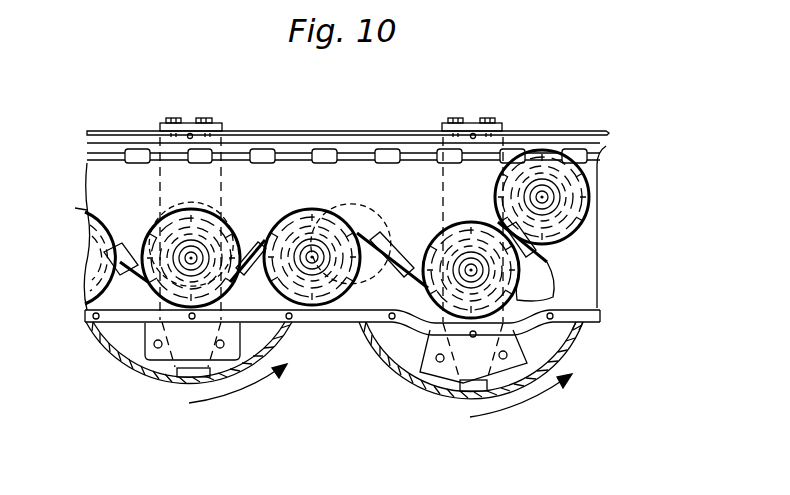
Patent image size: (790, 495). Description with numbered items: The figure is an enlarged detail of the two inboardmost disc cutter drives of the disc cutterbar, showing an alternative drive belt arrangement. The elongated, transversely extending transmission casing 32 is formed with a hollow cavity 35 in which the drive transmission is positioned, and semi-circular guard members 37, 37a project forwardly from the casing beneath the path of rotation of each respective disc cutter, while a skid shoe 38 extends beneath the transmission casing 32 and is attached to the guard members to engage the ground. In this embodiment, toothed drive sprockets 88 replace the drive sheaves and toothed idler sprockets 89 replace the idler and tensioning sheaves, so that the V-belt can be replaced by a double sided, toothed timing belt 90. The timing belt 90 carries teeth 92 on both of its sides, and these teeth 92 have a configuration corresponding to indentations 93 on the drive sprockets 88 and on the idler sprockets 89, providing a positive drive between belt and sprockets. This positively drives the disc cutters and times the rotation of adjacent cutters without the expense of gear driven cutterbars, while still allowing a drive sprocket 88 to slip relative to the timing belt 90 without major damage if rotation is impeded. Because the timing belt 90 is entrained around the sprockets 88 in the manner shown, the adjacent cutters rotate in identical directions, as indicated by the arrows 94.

The transmission casing 32 is at (414, 131).
The hollow cavity 35 is at (348, 184).
The semi-circular guard member 37 is at (118, 370).
The semi-circular guard member 37a is at (420, 391).
The skid shoe 38 is at (189, 123).
The toothed drive sprocket 88 is at (147, 230).
The toothed idler sprocket 89 is at (569, 160).
The timing belt 90 is at (400, 272).
The teeth 92 is at (377, 247).
The indentations 93 is at (323, 215).
The arrows 94 is at (250, 395).